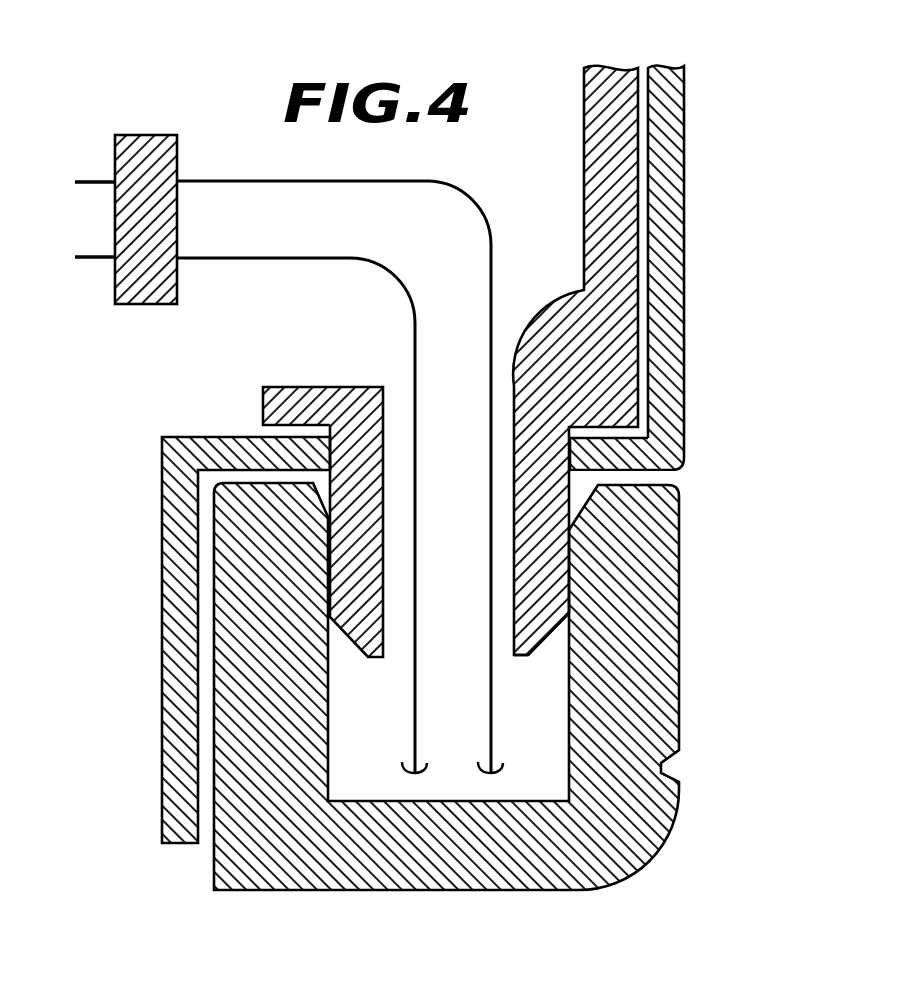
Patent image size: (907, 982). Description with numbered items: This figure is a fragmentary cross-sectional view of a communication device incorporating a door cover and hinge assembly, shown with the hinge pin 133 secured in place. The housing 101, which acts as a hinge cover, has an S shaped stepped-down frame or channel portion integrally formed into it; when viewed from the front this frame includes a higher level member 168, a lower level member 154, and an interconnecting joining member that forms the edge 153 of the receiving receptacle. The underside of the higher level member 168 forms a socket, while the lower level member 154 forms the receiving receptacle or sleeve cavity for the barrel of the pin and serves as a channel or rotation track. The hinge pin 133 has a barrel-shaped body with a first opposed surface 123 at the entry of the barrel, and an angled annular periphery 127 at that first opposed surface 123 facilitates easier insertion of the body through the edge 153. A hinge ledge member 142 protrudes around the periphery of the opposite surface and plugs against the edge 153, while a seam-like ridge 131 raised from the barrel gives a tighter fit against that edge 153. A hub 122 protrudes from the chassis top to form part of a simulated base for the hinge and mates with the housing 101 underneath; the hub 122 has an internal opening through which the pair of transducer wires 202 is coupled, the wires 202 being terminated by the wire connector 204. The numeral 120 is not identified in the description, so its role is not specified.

The housing 101 is at (670, 247).
The housing 120 is at (520, 686).
The hub 122 is at (630, 668).
The first opposed surface 123 is at (527, 657).
The angled annular periphery 127 is at (515, 655).
The seam-like ridge 131 is at (572, 482).
The hinge pin 133 is at (603, 343).
The hinge ledge member 142 is at (260, 408).
The edge of the receiving receptacle 153 is at (637, 473).
The lower level member 154 is at (185, 708).
The higher level member 168 is at (429, 558).
The transducer wires 202 is at (298, 262).
The wire connector 204 is at (140, 148).